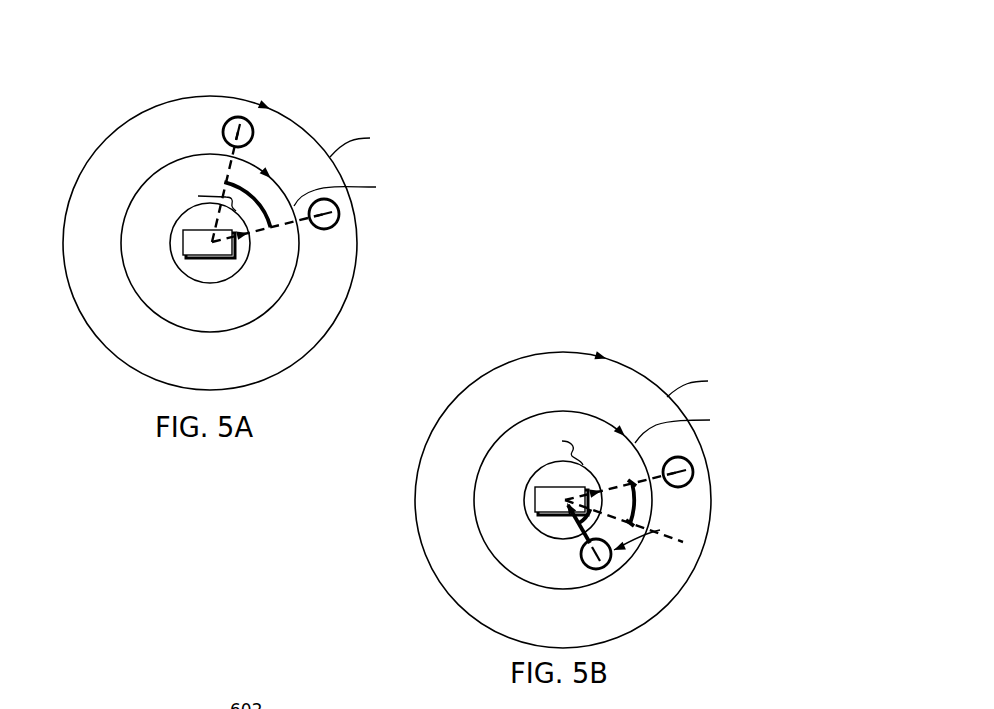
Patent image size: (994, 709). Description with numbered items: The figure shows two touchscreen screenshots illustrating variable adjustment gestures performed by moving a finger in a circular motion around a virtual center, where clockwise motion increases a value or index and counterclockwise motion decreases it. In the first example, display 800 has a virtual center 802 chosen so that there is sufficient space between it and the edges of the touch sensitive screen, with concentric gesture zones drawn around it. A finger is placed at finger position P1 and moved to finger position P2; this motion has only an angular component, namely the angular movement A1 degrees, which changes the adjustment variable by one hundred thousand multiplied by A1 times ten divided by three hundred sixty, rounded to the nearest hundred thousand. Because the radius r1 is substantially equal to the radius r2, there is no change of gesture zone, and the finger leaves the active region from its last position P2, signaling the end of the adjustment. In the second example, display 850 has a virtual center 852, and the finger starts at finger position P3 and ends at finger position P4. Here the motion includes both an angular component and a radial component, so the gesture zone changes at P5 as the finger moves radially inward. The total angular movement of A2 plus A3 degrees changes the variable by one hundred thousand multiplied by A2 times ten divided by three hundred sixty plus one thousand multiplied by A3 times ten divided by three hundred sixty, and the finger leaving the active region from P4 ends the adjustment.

In FIG. 5A, the display 800 is at (490, 105).
In FIG. 5A, the virtual center 802 is at (213, 257).
In FIG. 5A, the finger position P1 is at (222, 128).
In FIG. 5A, the finger position P2 is at (325, 230).
In FIG. 5A, the radius r1 is at (228, 182).
In FIG. 5A, the radius r2 is at (272, 226).
In FIG. 5A, the angular movement A1 is at (238, 183).
In FIG. 5B, the display 850 is at (662, 353).
In FIG. 5B, the virtual center 852 is at (565, 514).
In FIG. 5B, the finger position P3 is at (692, 470).
In FIG. 5B, the finger position P4 is at (598, 569).
In FIG. 5B, the finger position P5 is at (655, 530).
In FIG. 5B, the angular movement A2 is at (632, 503).
In FIG. 5B, the angular movement A3 is at (578, 521).